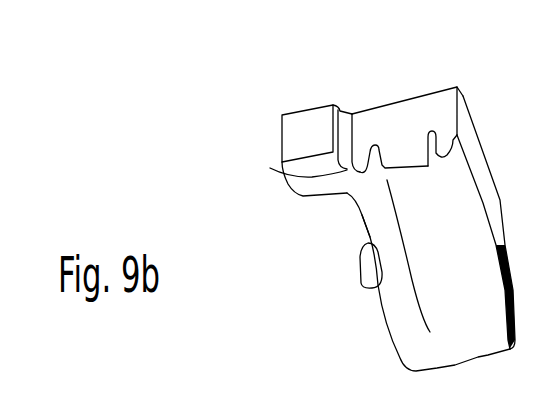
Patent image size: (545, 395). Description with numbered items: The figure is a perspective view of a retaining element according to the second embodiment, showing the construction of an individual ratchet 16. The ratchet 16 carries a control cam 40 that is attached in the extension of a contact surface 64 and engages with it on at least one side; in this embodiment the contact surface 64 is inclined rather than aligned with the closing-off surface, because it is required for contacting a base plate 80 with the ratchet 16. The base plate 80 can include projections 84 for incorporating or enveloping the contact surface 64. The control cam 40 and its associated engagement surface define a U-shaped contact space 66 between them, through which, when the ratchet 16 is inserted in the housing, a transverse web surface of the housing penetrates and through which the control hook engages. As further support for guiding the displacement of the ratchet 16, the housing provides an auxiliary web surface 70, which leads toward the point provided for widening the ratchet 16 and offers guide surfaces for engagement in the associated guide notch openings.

The ratchet 16 is at (380, 219).
The control cam 40 is at (296, 130).
The contact surface 64 is at (355, 201).
The U-shaped contact space 66 is at (358, 262).
The auxiliary web surface 70 is at (410, 233).
The base plate 80 is at (403, 124).
The projections 84 is at (290, 176).